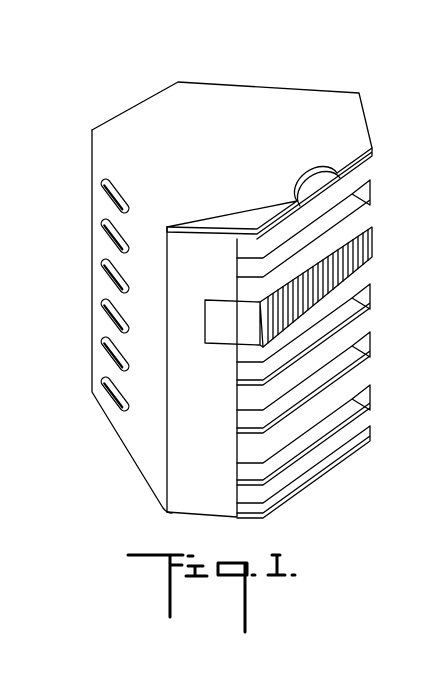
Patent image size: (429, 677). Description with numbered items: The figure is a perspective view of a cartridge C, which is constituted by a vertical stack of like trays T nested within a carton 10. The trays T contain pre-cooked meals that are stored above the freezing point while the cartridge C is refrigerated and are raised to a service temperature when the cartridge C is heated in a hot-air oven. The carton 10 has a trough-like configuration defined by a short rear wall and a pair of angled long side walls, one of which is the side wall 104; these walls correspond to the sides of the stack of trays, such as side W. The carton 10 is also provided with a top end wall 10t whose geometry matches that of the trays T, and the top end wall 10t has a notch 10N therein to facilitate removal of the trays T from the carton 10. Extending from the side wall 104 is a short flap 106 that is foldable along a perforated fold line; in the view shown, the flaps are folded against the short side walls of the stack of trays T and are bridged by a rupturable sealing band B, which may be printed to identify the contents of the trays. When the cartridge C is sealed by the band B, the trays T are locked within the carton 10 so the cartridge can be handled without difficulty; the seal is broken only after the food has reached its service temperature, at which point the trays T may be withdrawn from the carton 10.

The carton 10 is at (228, 266).
The top end wall 10t is at (232, 141).
The notch 10N is at (327, 158).
The side wall 104 is at (97, 280).
The flap 106 is at (216, 243).
The sealing band B is at (363, 237).
The trays T is at (345, 372).
The cartridge C is at (263, 60).
The side of stack of trays W is at (421, 272).